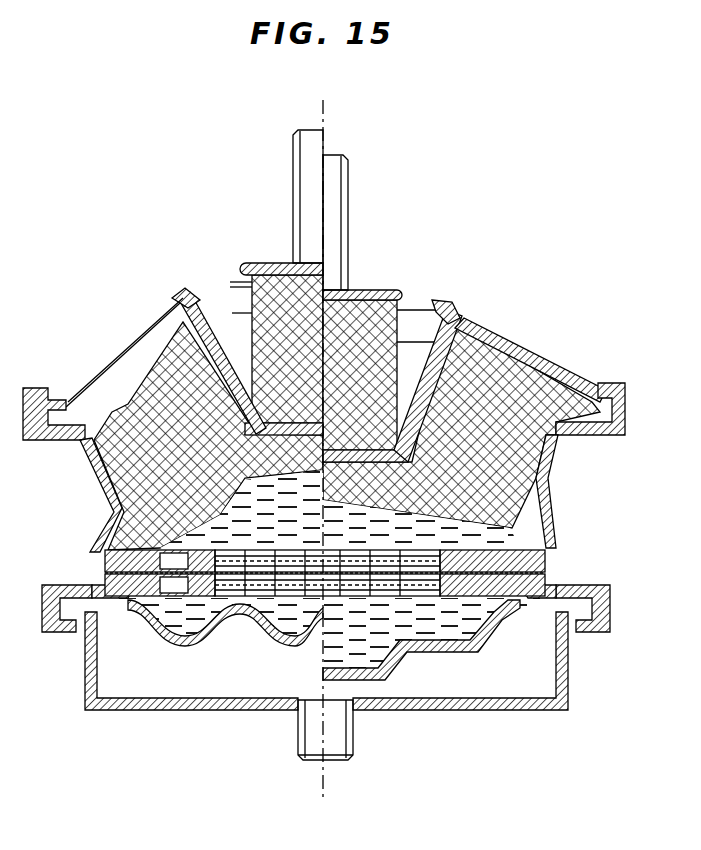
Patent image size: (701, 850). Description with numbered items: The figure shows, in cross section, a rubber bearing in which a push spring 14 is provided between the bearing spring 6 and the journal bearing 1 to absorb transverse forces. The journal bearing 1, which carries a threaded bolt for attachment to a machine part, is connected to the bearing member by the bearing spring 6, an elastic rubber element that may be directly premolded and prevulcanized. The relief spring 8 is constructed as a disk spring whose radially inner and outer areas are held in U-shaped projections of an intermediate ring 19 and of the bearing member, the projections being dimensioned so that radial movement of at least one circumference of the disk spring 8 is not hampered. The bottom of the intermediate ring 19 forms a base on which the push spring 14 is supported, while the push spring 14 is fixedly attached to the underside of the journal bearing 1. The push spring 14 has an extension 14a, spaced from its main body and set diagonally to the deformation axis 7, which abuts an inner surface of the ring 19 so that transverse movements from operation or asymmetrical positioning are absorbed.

The journal bearing 1 is at (380, 292).
The bearing spring 6 is at (535, 475).
The deformation axis 7 is at (323, 115).
The relief spring 8 is at (540, 373).
The push spring 14 is at (398, 318).
The extension 14a is at (222, 362).
The intermediate ring 19 is at (463, 352).